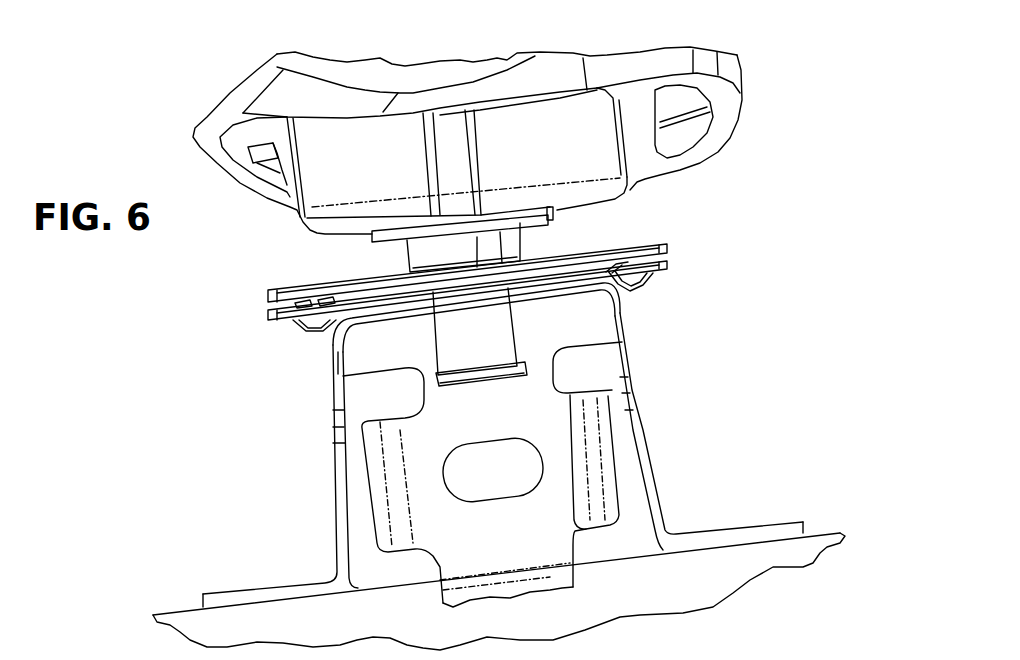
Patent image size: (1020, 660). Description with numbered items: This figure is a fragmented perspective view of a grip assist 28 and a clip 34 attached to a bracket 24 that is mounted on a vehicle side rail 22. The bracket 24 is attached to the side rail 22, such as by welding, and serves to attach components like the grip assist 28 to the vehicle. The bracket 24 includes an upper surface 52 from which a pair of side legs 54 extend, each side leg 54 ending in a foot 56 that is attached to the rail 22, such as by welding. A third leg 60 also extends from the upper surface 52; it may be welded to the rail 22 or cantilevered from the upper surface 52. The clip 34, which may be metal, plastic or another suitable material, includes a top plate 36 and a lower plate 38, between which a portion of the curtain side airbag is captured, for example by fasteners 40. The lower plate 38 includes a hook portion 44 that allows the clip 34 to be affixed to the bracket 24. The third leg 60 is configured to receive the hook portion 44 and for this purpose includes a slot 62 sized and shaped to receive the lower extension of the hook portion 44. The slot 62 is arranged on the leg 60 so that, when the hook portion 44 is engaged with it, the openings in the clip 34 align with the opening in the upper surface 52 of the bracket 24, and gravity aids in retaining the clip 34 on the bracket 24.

The side rail 22 is at (663, 587).
The bracket 24 is at (503, 445).
The grip assist 28 is at (645, 64).
The clip 34 is at (539, 247).
The top plate 36 is at (647, 250).
The lower plate 38 is at (668, 266).
The fasteners 40 is at (640, 283).
The hook portion 44 is at (514, 362).
The upper surface 52 is at (375, 300).
The side legs 54 is at (344, 550).
The foot 56 is at (255, 597).
The third leg 60 is at (433, 510).
The slot 62 is at (495, 380).